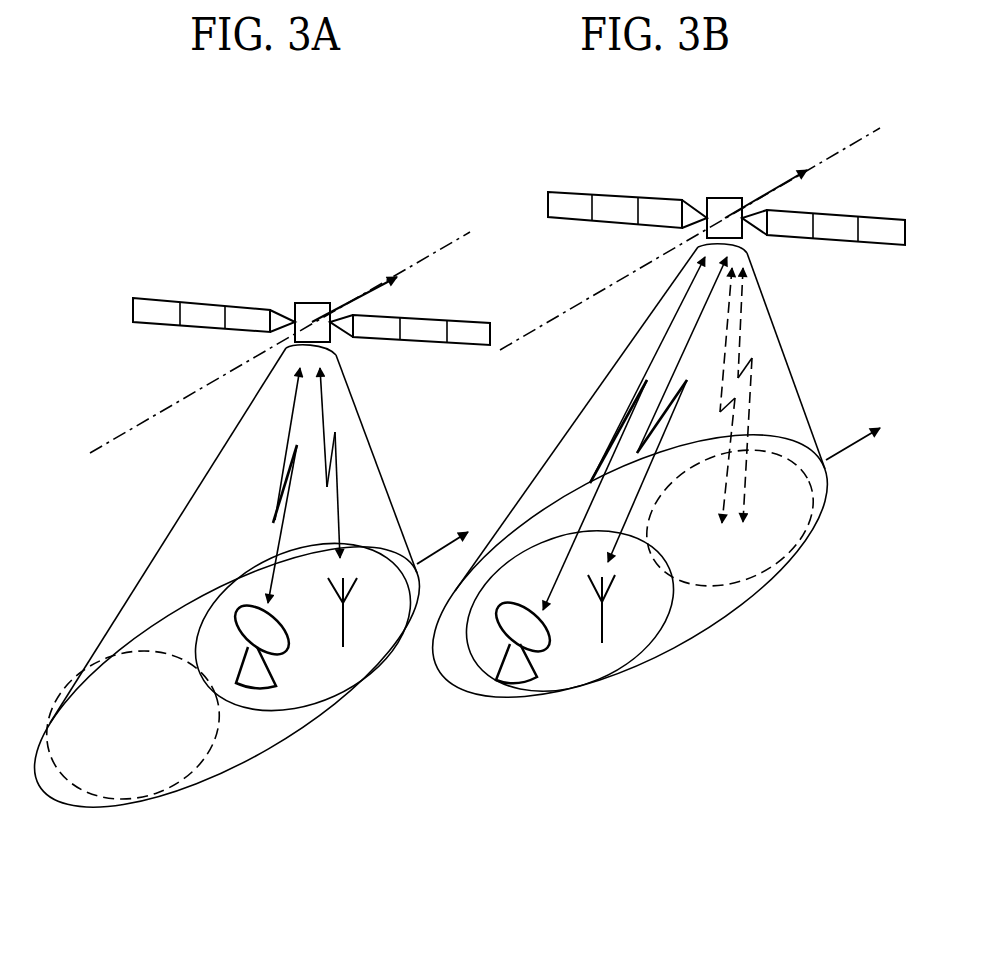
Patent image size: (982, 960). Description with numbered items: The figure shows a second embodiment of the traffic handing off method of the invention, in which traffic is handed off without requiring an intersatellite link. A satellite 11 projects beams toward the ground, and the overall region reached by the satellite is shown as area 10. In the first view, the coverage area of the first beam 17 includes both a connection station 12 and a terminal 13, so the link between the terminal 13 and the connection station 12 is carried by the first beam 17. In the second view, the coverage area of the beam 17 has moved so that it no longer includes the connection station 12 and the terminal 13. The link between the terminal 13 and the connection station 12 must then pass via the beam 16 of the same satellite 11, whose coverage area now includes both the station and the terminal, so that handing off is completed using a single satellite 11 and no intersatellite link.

In FIG. 3A, the coverage area of satellite beam 10 is at (257, 752).
In FIG. 3B, the coverage area of satellite beam 10 is at (690, 637).
In FIG. 3A, the satellite 11 is at (318, 312).
In FIG. 3B, the satellite 11 is at (728, 208).
In FIG. 3A, the connection station 12 is at (272, 625).
In FIG. 3B, the connection station 12 is at (537, 633).
In FIG. 3A, the terminal 13 is at (357, 587).
In FIG. 3B, the terminal 13 is at (612, 587).
In FIG. 3A, the beam 16 is at (186, 760).
In FIG. 3B, the beam 16 is at (577, 662).
In FIG. 3A, the first beam 17 is at (332, 668).
In FIG. 3B, the first beam 17 is at (767, 567).